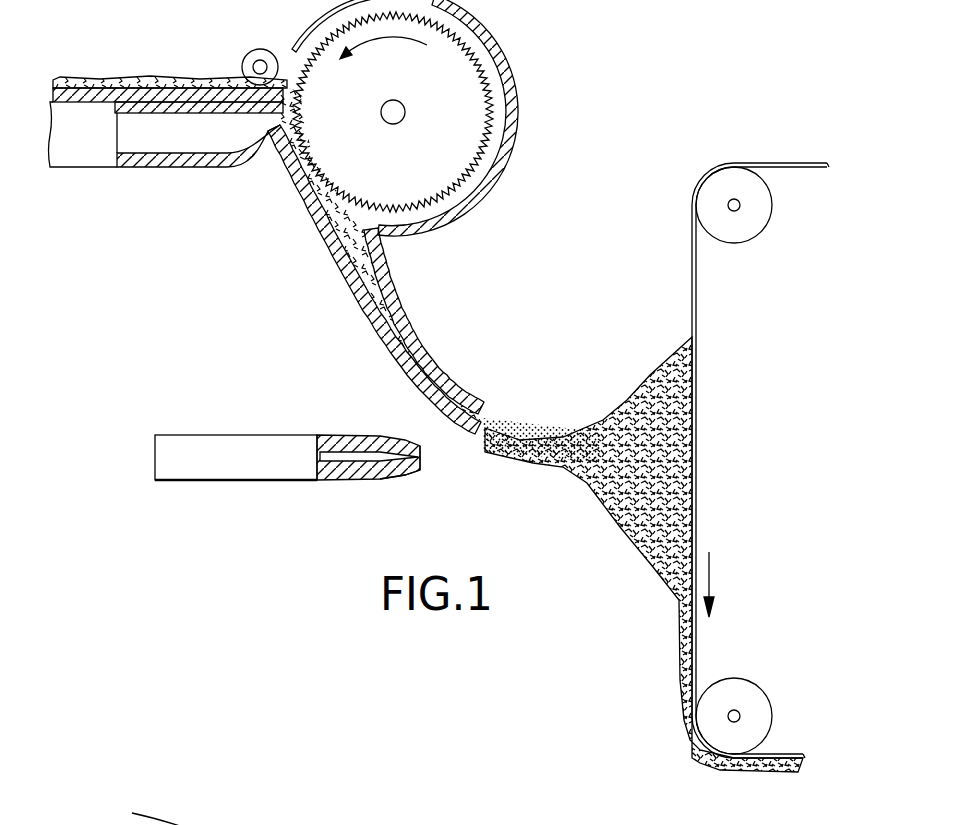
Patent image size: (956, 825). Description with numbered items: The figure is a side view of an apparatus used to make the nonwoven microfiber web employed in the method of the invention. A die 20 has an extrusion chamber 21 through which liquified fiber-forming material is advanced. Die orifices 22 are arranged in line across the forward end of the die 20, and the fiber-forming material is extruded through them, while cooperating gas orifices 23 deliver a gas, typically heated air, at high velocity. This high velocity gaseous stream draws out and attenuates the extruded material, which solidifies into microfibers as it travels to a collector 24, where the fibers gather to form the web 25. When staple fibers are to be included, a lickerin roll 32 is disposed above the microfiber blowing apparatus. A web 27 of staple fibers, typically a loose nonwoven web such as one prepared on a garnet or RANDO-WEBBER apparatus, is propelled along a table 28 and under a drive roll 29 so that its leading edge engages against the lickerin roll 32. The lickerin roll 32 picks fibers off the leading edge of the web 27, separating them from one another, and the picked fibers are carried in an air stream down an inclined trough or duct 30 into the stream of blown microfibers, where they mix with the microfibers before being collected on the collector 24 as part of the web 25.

The die 20 is at (236, 433).
The extrusion chamber 21 is at (343, 457).
The die orifices 22 is at (423, 461).
The gas orifices 23 is at (388, 481).
The collector 24 is at (697, 320).
The web 25 is at (678, 683).
The web of staple fibers 27 is at (220, 83).
The table 28 is at (107, 93).
The drive roll 29 is at (266, 49).
The inclined trough or duct 30 is at (355, 226).
The lickerin roll 32 is at (448, 148).